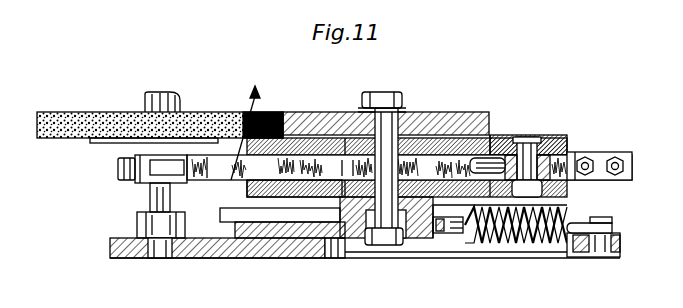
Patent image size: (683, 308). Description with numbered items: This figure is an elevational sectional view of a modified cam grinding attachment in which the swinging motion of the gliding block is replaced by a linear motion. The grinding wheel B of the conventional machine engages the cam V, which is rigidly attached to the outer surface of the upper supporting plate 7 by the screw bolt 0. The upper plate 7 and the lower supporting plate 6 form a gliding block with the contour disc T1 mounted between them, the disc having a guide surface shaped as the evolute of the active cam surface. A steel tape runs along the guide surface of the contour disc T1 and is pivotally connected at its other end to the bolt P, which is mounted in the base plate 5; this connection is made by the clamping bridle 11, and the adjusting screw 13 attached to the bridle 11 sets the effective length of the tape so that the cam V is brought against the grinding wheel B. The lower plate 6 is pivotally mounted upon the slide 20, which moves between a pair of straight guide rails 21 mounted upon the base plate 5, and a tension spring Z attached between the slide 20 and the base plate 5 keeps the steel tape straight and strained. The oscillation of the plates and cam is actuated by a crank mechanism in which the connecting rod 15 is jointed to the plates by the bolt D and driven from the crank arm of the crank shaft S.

The grinding wheel B is at (63, 113).
The cam V is at (470, 112).
The upper supporting plate 7 is at (298, 152).
The clamping bridle 11 is at (201, 167).
The adjusting screw 13 is at (119, 179).
The bolt P is at (158, 197).
The base plate 5 is at (133, 247).
The straight guide rails 21 is at (229, 213).
The slide 20 is at (307, 226).
The lower supporting plate 6 is at (262, 188).
The screw bolt 0 is at (403, 106).
The contour disc T1 is at (448, 168).
The tension spring Z is at (532, 218).
The bolt D is at (534, 178).
The connecting rod 15 is at (501, 180).
The crank shaft S is at (590, 158).